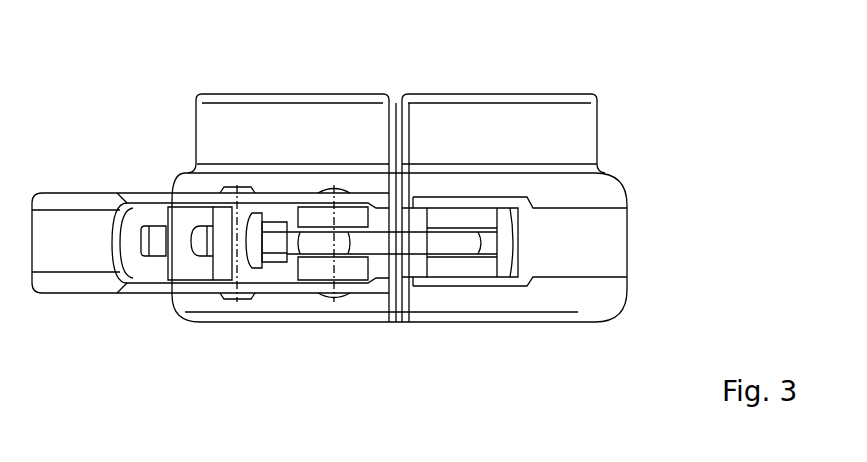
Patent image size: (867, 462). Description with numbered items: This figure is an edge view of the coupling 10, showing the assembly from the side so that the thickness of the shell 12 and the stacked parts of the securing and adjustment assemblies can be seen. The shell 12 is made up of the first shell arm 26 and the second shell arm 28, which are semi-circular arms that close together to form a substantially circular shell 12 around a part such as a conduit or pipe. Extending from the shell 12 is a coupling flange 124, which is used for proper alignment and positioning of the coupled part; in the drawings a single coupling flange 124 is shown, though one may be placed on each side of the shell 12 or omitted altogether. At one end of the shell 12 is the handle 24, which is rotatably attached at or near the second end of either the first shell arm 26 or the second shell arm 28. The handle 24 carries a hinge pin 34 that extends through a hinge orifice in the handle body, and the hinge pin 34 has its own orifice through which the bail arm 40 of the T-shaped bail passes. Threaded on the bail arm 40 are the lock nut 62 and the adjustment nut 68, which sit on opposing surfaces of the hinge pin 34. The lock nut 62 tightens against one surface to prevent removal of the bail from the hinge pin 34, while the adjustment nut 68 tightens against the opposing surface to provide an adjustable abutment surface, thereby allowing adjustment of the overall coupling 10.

The coupling 10 is at (398, 235).
The shell 12 is at (545, 326).
The handle 24 is at (72, 297).
The first shell arm 26 is at (183, 183).
The second shell arm 28 is at (597, 192).
The hinge pin 34 is at (222, 276).
The bail arm 40 is at (433, 240).
The lock nut 62 is at (203, 262).
The adjustment nut 68 is at (278, 262).
The coupling flange 124 is at (472, 118).